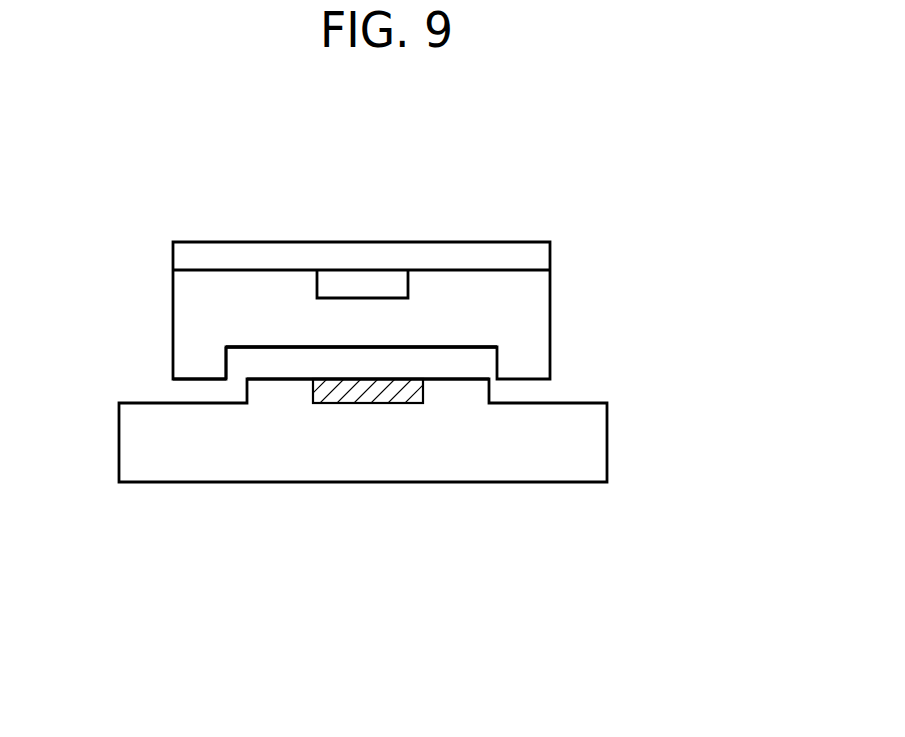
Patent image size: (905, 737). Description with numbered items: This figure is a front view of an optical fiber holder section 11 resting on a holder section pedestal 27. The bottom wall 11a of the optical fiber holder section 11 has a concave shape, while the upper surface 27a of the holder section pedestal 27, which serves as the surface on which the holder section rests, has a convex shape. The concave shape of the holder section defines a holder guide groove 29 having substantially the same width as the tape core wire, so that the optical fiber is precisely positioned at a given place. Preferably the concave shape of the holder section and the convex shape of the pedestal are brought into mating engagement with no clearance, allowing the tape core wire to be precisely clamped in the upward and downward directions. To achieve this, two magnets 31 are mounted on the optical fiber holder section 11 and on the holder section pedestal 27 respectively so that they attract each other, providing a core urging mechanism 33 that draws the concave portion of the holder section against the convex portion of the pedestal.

The optical fiber holder section 11 is at (523, 315).
The bottom wall 11a is at (445, 347).
The holder section pedestal 27 is at (588, 443).
The upper surface 27a is at (440, 379).
The holder guide groove 29 is at (246, 355).
The magnet 31 is at (372, 285).
The core urging mechanism 33 is at (436, 301).